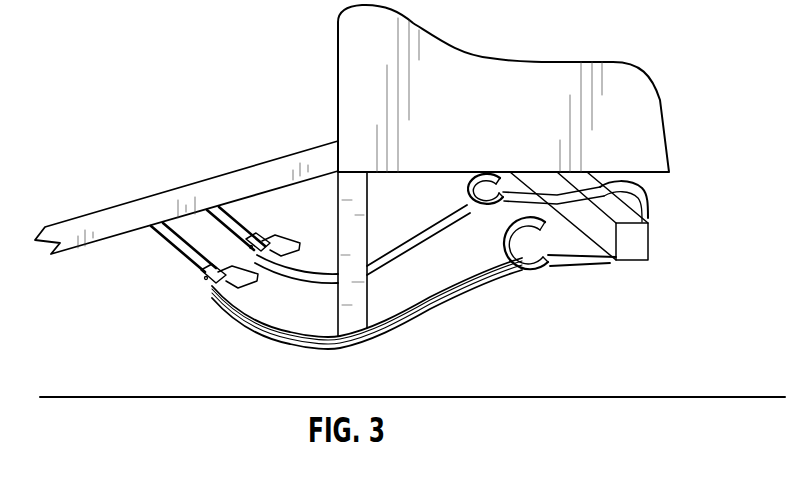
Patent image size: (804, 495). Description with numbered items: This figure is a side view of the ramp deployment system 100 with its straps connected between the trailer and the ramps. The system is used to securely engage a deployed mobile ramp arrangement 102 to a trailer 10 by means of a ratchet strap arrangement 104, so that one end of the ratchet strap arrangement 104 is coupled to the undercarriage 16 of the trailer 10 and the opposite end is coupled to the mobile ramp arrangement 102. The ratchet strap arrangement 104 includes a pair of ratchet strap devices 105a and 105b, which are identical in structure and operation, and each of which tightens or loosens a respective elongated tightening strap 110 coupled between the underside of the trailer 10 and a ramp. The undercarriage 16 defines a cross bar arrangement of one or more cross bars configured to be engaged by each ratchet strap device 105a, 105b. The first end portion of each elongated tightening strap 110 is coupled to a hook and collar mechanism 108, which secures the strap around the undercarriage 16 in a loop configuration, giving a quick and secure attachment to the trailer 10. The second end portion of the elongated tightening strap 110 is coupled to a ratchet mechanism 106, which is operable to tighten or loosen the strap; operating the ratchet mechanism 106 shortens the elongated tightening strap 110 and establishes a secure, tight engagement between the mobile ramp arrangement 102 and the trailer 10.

The trailer 10 is at (530, 120).
The undercarriage 16 is at (637, 250).
The ramp deployment system 100 is at (281, 100).
The mobile ramp arrangement 102 is at (196, 175).
The ratchet strap arrangement 104 is at (383, 357).
The first ratchet strap device 105a is at (158, 262).
The second ratchet strap device 105b is at (254, 217).
The ratchet mechanism 106 is at (240, 312).
The hook and collar mechanism 108 is at (573, 266).
The elongated tightening strap 110 is at (462, 303).